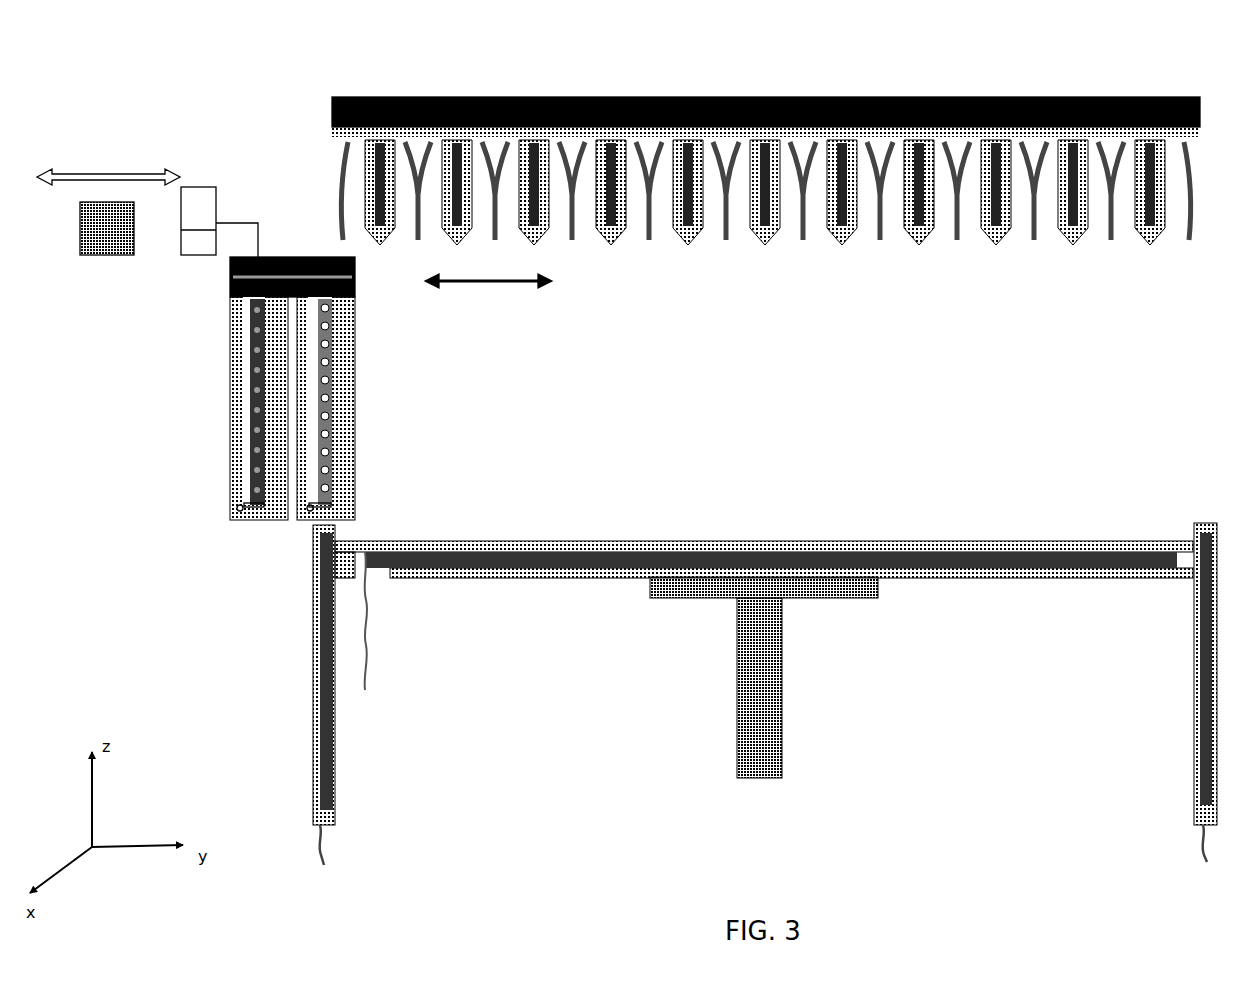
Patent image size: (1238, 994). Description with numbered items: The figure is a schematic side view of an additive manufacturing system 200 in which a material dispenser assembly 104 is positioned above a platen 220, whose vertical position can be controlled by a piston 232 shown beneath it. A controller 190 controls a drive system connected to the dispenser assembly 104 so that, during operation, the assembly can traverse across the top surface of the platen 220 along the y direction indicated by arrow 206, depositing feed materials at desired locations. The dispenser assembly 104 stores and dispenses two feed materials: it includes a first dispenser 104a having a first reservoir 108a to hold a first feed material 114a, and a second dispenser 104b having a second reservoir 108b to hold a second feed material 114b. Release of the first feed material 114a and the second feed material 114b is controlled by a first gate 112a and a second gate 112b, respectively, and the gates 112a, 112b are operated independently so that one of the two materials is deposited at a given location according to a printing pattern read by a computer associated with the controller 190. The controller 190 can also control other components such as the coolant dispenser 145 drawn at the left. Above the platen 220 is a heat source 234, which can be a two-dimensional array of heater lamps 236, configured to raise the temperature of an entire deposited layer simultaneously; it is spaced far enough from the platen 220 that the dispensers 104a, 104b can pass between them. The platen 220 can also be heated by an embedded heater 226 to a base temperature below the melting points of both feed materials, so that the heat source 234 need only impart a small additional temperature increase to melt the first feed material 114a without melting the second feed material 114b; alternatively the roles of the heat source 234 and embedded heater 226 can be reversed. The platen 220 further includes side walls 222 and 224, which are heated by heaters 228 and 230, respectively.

The additive manufacturing system 200 is at (888, 36).
The heat source 234 is at (332, 101).
The heater lamps 236 is at (835, 246).
The controller 190 is at (219, 222).
The coolant dispenser 145 is at (95, 232).
The arrow 206 is at (513, 284).
The material dispenser assembly 104 is at (346, 440).
The first dispenser 104a is at (317, 460).
The second dispenser 104b is at (396, 421).
The first reservoir 108a is at (262, 405).
The second reservoir 108b is at (318, 440).
The first gate 112a is at (242, 514).
The second gate 112b is at (336, 516).
The first feed material 114a is at (252, 512).
The second feed material 114b is at (363, 383).
The platen 220 is at (764, 621).
The side wall 222 is at (313, 655).
The side wall 224 is at (1194, 683).
The embedded heater 226 is at (1003, 566).
The heater 228 is at (335, 752).
The heater 230 is at (1197, 760).
The piston 232 is at (786, 673).